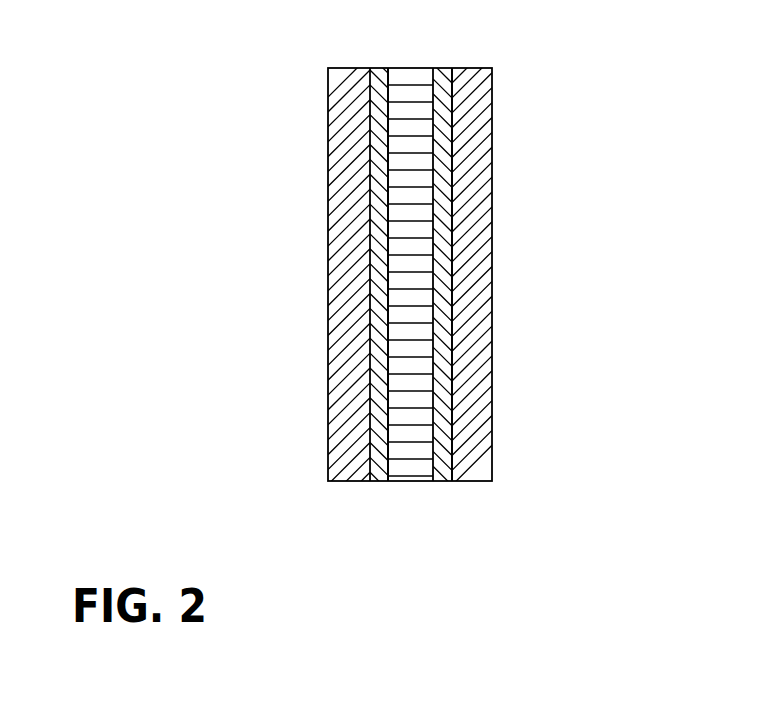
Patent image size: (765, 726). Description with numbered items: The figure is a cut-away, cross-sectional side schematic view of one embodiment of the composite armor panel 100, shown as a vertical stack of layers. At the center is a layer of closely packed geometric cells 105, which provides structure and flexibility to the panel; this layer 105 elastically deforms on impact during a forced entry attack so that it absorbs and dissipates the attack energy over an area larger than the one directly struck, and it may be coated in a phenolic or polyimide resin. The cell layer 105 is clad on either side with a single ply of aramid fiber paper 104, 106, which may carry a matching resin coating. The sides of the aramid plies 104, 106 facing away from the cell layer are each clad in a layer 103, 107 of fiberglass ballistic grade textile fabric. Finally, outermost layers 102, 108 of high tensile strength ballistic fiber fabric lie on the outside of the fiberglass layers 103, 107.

The layered structure / display device 100 is at (594, 54).
The high tensile strength ballistic fiber fabric layer 102 is at (348, 481).
The fiberglass ballistic grade textile fabric layer 103 is at (379, 481).
The aramid fiber paper ply 104 is at (388, 481).
The layer of closely packed geometric cells 105 is at (414, 481).
The aramid fiber paper ply 106 is at (434, 481).
The fiberglass ballistic grade textile fabric layer 107 is at (444, 481).
The high tensile strength ballistic fiber fabric layer 108 is at (473, 481).